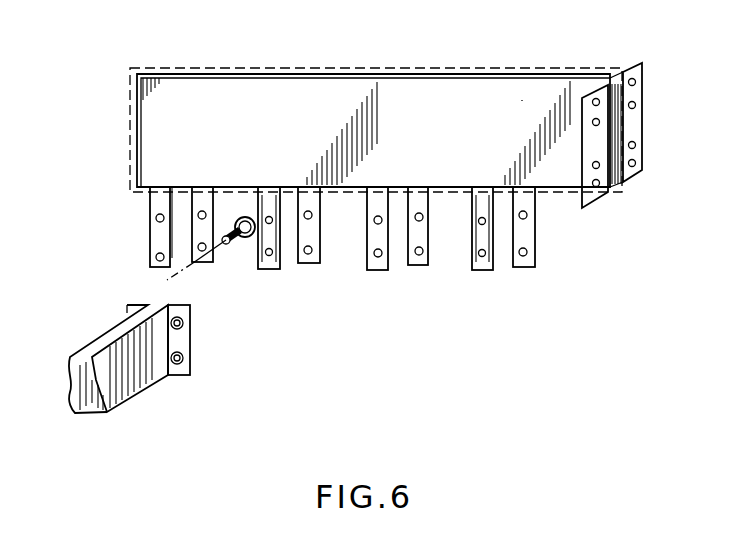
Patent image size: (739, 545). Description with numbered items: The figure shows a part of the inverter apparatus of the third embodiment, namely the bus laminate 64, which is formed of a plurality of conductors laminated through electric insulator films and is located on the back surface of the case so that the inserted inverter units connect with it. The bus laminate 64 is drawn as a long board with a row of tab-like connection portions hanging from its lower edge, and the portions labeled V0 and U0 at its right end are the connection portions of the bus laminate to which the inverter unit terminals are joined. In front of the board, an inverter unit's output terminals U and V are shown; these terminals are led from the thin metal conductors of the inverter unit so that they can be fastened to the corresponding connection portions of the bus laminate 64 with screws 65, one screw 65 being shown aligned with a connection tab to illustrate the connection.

The bus laminate 64 is at (383, 64).
The connecting plate V0 is at (522, 100).
The terminal bracket U0 is at (625, 65).
The screws 65 is at (167, 280).
The output terminal U is at (150, 383).
The output terminal V is at (110, 330).